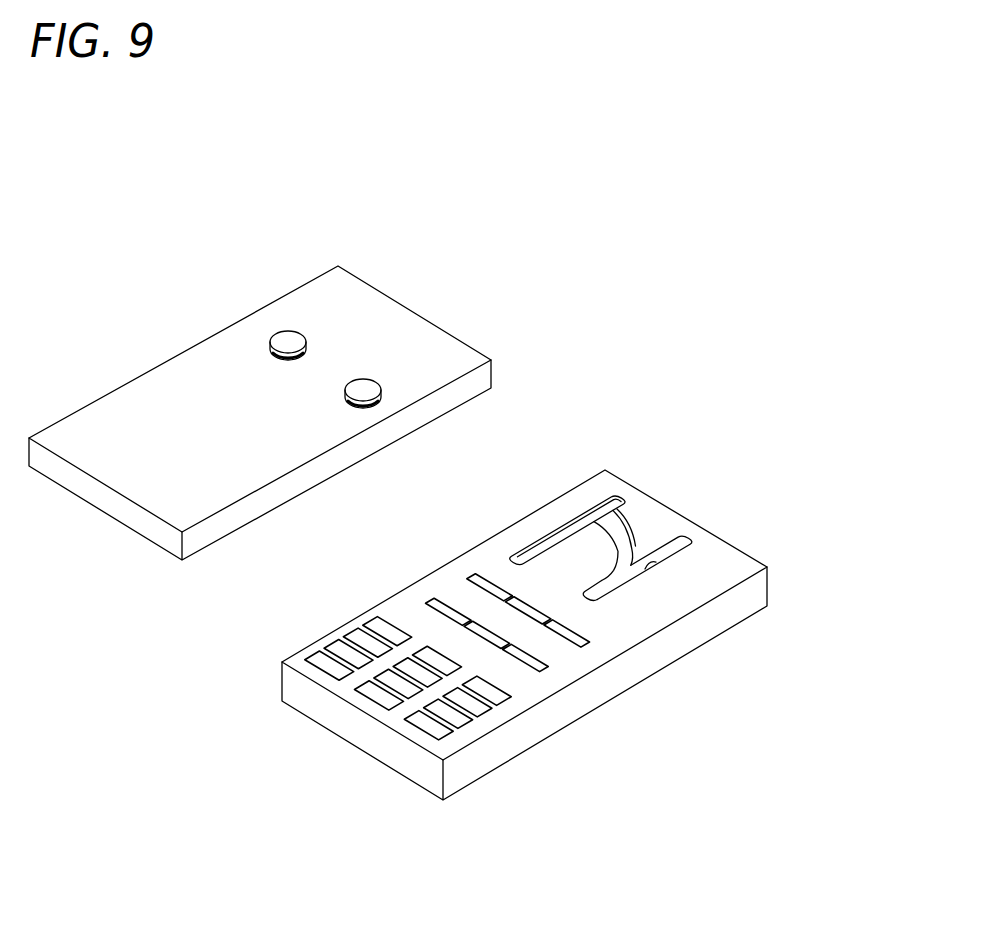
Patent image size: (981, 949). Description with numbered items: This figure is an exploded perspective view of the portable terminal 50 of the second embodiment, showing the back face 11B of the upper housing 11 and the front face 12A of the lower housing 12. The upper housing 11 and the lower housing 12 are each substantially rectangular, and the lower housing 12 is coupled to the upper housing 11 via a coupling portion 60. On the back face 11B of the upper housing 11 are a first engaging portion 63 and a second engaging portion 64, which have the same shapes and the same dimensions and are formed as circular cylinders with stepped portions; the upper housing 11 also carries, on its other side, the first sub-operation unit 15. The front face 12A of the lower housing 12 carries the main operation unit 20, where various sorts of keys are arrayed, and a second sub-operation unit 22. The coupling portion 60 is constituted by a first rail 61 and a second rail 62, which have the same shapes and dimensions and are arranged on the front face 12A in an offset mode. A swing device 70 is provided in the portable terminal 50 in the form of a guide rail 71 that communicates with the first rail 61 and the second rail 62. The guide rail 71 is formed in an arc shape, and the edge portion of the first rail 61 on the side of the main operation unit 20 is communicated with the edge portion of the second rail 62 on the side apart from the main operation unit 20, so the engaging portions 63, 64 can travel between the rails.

The portable terminal 50 is at (593, 197).
The first sub-operation unit 15 is at (137, 539).
The upper housing 11 is at (388, 292).
The back face of upper housing 11B is at (413, 340).
The first engaging portion 63 is at (287, 339).
The second engaging portion 64 is at (366, 389).
The coupling portion 60 is at (358, 540).
The lower housing 12 is at (618, 477).
The front face of lower housing 12A is at (722, 553).
The main operation unit 20 is at (490, 722).
The second sub-operation unit 22 is at (560, 652).
The second rail 62 is at (552, 537).
The first rail 61 is at (670, 563).
The swing device 70 is at (692, 432).
The guide rail 71 is at (624, 524).